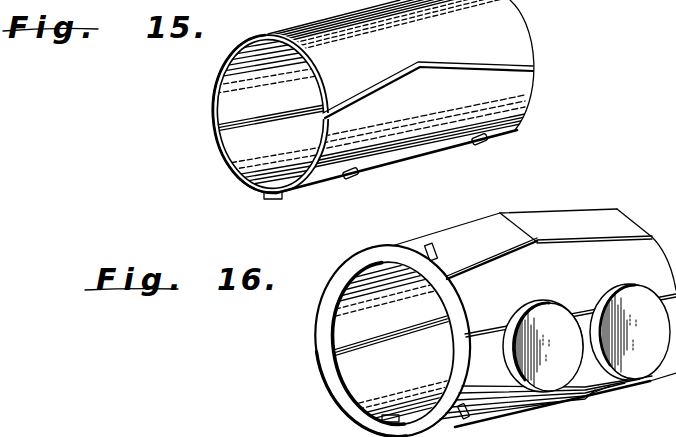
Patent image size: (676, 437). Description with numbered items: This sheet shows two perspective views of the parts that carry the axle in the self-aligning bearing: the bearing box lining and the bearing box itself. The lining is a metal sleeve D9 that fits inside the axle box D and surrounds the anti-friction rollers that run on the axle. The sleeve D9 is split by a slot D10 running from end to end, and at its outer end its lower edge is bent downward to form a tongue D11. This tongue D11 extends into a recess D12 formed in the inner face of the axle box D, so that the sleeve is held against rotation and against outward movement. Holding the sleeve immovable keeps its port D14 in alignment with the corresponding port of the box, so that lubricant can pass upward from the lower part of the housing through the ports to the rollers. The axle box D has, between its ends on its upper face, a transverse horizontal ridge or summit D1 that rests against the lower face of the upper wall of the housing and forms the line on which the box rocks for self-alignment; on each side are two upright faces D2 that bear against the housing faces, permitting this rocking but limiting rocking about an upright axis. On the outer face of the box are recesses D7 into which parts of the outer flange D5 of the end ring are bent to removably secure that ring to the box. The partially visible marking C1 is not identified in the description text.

In FIG. 16, the axle box D is at (533, 266).
In FIG. 16, the transverse horizontal ridge or summit D1 is at (492, 226).
In FIG. 16, the upright faces D2 is at (551, 374).
In FIG. 16, the outer flange D5 is at (468, 417).
In FIG. 16, the recesses D7 is at (437, 250).
In FIG. 15, the metal sleeve D9 is at (530, 100).
In FIG. 15, the slot D10 is at (433, 64).
In FIG. 15, the tongue D11 is at (274, 199).
In FIG. 16, the recess D12 is at (358, 387).
In FIG. 15, the port D14 is at (351, 177).
In FIG. 16, the lower element C1 is at (229, 433).